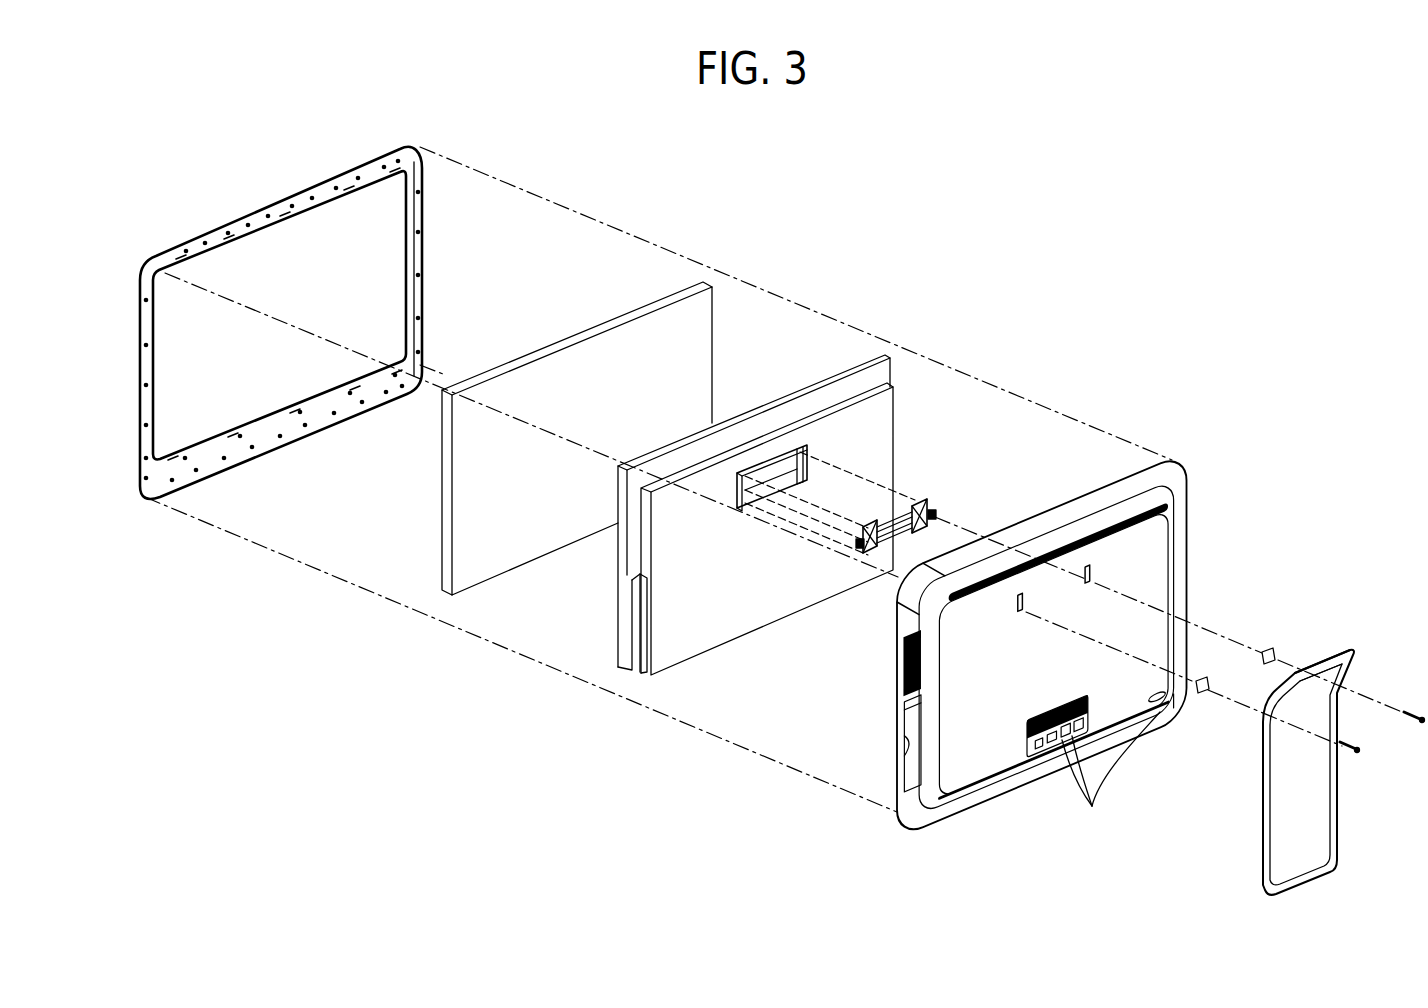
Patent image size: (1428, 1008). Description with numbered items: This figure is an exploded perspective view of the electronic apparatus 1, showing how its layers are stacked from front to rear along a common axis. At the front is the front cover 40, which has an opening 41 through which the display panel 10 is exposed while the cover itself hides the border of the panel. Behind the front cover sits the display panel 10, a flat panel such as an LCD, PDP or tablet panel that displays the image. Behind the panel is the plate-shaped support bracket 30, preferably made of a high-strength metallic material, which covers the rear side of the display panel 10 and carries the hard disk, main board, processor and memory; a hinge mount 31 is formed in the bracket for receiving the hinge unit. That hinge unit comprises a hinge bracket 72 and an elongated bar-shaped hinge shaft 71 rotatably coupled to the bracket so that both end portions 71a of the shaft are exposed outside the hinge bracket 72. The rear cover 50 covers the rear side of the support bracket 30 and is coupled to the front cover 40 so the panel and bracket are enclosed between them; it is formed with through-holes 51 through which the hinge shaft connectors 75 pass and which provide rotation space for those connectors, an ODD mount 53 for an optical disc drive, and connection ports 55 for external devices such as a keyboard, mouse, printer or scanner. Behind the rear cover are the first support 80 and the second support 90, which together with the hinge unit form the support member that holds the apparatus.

The electronic apparatus 1 is at (134, 141).
The front cover 40 is at (265, 213).
The opening 41 is at (385, 205).
The display panel 10 is at (556, 343).
The support bracket 30 is at (838, 423).
The hinge mount 31 is at (790, 462).
The hinge bracket 72 is at (897, 512).
The hinge shaft 71 is at (925, 515).
The end portions 71a is at (938, 514).
The rear cover 50 is at (1082, 497).
The through-holes 51 is at (1095, 580).
The ODD mount 53 is at (905, 735).
The connection ports 55 is at (1093, 765).
The hinge shaft connectors 75 is at (1268, 652).
The second support 90 is at (1348, 650).
The first support 80 is at (1337, 823).